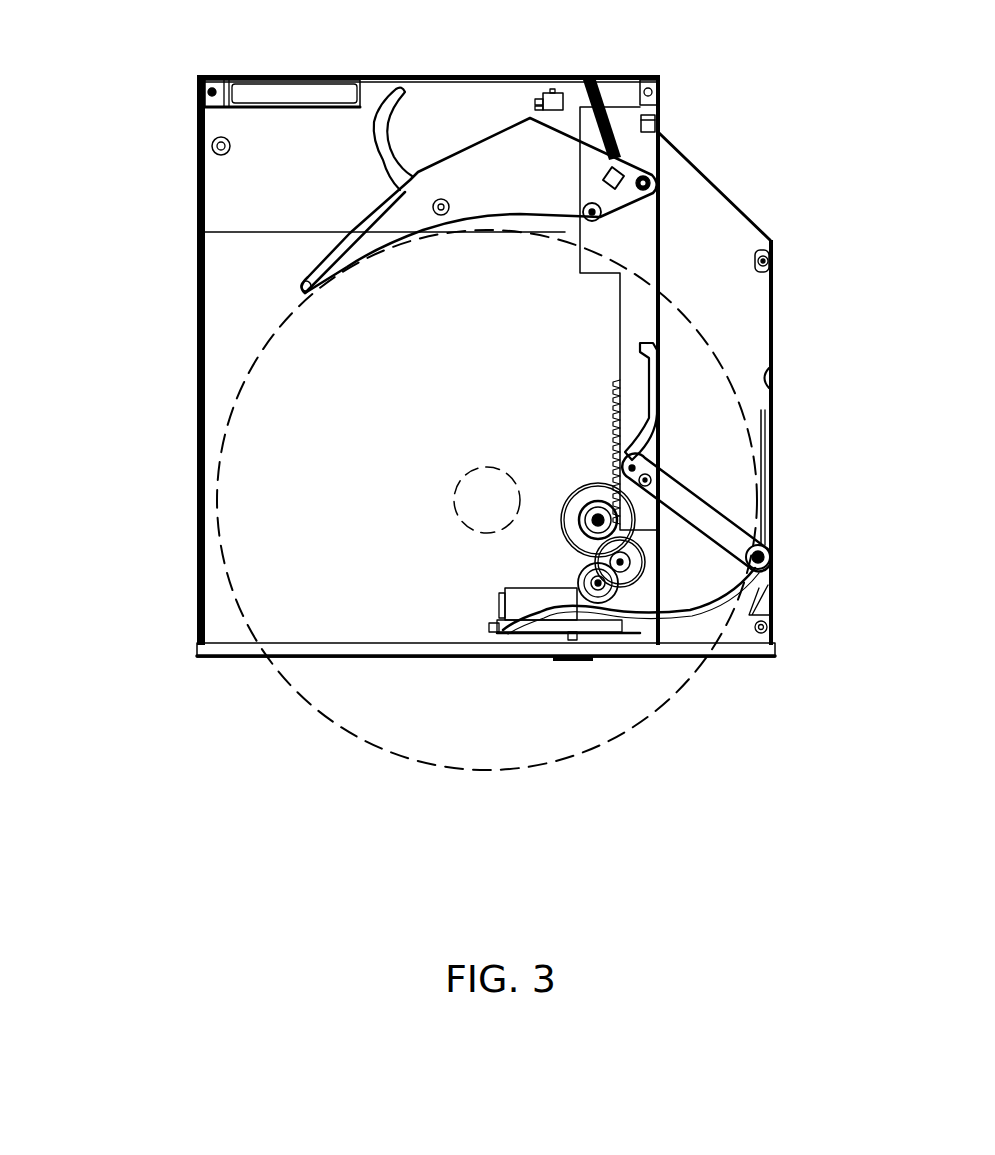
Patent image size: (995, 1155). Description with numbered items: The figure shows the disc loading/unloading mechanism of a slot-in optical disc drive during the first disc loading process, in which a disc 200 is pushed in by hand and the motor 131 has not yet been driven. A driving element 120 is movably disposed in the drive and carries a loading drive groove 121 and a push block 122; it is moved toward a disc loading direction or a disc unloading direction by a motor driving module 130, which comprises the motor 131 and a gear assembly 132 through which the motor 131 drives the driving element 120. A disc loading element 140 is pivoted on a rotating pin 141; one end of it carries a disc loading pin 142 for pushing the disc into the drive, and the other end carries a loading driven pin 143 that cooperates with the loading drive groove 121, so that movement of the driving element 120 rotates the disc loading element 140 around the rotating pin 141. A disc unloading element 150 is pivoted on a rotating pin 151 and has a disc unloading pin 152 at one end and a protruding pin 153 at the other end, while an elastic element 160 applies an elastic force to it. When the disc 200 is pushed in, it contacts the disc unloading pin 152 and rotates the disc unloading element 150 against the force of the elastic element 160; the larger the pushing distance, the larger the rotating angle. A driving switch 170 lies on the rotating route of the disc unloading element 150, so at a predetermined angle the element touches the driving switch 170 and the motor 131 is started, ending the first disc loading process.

The driving element 120 is at (620, 307).
The loading drive groove 121 is at (755, 422).
The push block 122 is at (650, 130).
The motor driving module 130 is at (632, 600).
The motor 131 is at (503, 590).
The gear assembly 132 is at (577, 578).
The disc loading element 140 is at (697, 533).
The rotating pin 141 is at (650, 478).
The disc loading pin 142 is at (760, 547).
The loading driven pin 143 is at (636, 466).
The disc unloading element 150 is at (370, 217).
The rotating pin 151 is at (600, 220).
The disc unloading pin 152 is at (305, 287).
The protruding pin 153 is at (652, 183).
The elastic element 160 is at (596, 100).
The driving switch 170 is at (545, 92).
The disc 200 is at (375, 745).